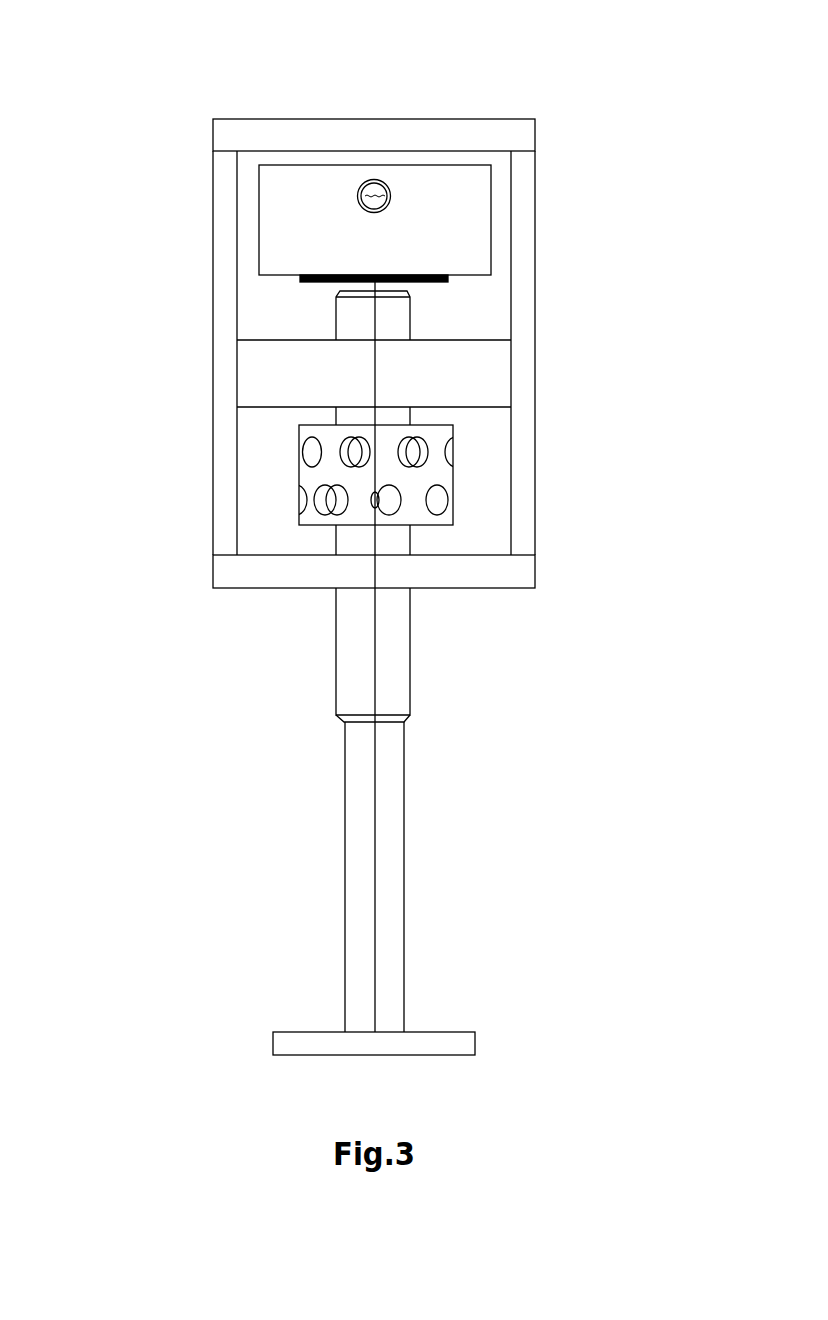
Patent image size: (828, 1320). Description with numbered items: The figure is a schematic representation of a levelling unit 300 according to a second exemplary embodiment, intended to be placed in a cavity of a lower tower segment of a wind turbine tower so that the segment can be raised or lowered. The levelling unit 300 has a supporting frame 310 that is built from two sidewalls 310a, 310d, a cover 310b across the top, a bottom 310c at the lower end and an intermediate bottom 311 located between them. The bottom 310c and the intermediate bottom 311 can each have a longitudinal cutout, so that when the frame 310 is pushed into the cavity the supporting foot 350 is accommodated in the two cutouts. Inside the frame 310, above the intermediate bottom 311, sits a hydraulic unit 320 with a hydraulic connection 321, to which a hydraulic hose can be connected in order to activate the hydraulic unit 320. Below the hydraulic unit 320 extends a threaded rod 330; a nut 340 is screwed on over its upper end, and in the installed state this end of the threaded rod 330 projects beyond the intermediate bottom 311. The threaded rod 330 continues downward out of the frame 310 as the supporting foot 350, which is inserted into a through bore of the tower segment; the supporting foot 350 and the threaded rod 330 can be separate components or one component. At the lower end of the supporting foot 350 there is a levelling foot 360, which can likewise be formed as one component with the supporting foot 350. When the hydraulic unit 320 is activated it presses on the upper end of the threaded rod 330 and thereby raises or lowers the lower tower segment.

The levelling unit 300 is at (598, 123).
The supporting frame 310 is at (213, 186).
The sidewall 310a is at (525, 306).
The cover 310b is at (312, 119).
The bottom 310c is at (512, 590).
The sidewall 310d is at (222, 526).
The intermediate bottom 311 is at (374, 373).
The hydraulic unit 320 is at (303, 230).
The hydraulic connection 321 is at (391, 183).
The threaded rod 330 is at (352, 308).
The nut 340 is at (322, 489).
The supporting foot 350 is at (375, 872).
The levelling foot 360 is at (452, 1031).